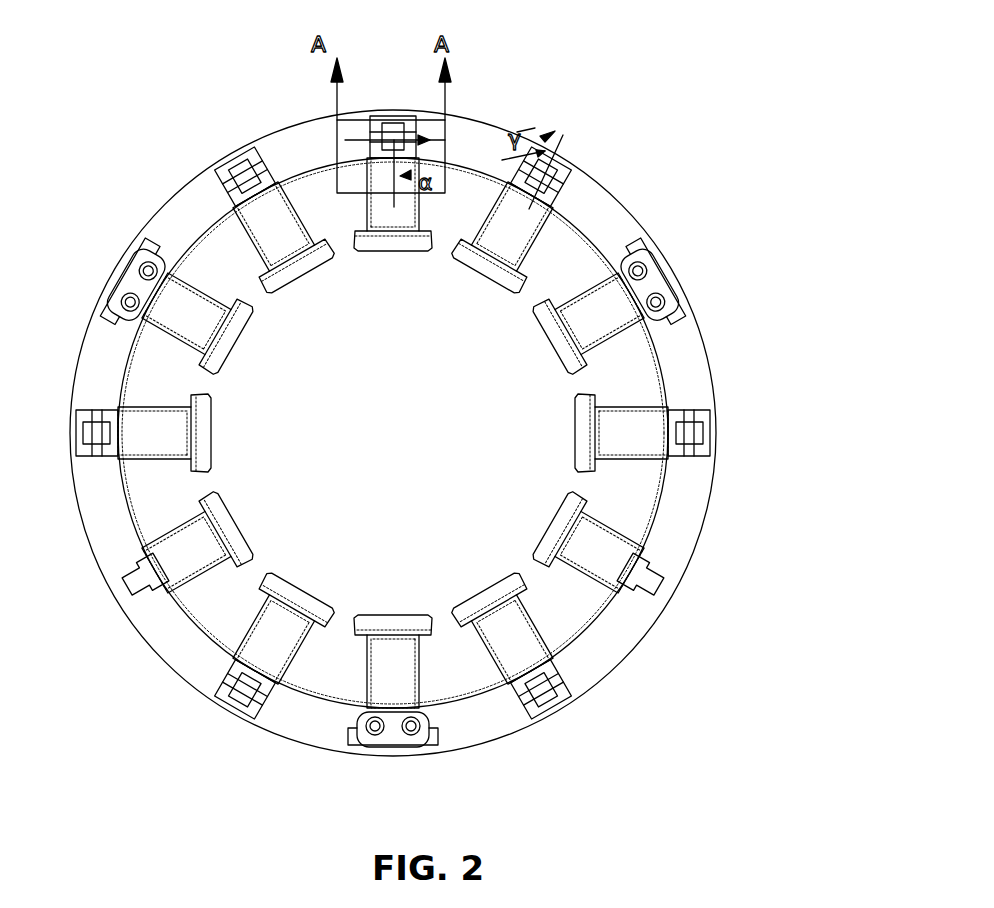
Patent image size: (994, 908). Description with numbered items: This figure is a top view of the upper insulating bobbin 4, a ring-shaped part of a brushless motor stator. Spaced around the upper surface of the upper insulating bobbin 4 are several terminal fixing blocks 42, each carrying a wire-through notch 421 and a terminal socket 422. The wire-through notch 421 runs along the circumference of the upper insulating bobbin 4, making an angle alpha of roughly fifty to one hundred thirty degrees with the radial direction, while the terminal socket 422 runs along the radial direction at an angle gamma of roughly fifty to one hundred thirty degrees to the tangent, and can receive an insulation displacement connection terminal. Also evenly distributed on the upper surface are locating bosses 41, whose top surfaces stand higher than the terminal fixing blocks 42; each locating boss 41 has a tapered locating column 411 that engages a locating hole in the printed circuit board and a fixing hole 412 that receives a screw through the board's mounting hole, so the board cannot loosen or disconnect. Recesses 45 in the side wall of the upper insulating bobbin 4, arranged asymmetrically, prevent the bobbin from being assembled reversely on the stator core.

The upper insulating bobbin 4 is at (180, 210).
The locating boss 41 is at (727, 264).
The locating column 411 is at (640, 270).
The fixing hole 412 is at (660, 302).
The terminal fixing block 42 is at (759, 493).
The wire-through notch 421 is at (703, 421).
The terminal socket 422 is at (535, 690).
The recess 45 is at (365, 717).